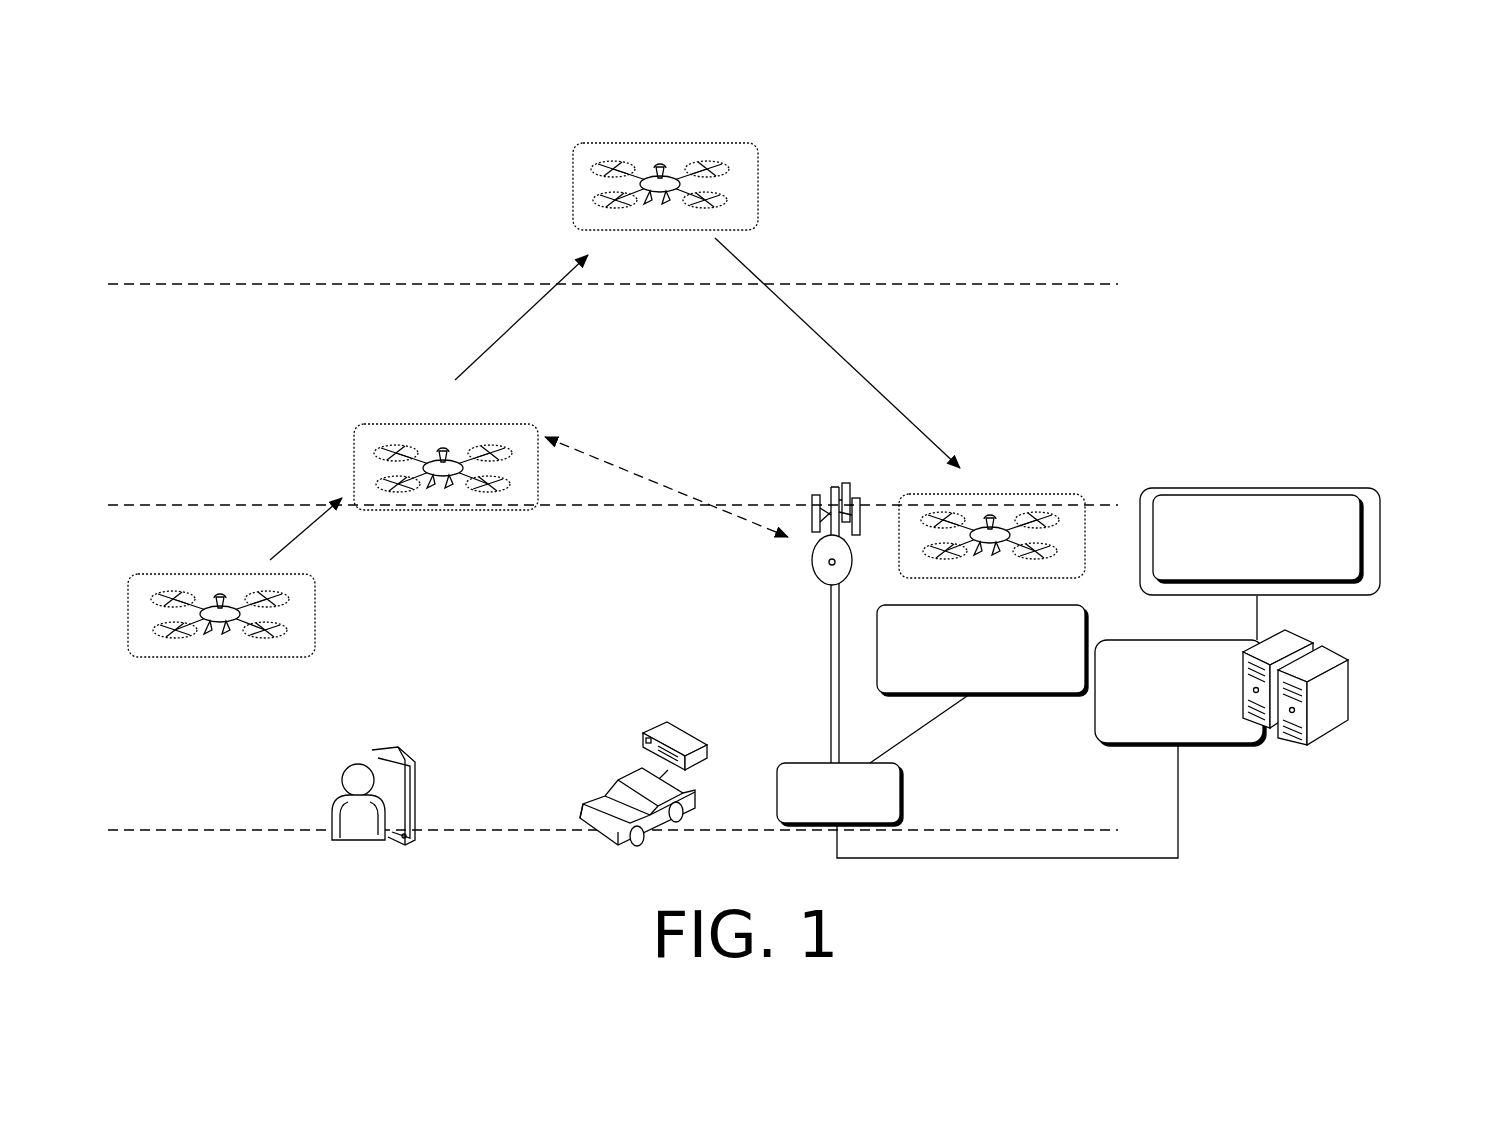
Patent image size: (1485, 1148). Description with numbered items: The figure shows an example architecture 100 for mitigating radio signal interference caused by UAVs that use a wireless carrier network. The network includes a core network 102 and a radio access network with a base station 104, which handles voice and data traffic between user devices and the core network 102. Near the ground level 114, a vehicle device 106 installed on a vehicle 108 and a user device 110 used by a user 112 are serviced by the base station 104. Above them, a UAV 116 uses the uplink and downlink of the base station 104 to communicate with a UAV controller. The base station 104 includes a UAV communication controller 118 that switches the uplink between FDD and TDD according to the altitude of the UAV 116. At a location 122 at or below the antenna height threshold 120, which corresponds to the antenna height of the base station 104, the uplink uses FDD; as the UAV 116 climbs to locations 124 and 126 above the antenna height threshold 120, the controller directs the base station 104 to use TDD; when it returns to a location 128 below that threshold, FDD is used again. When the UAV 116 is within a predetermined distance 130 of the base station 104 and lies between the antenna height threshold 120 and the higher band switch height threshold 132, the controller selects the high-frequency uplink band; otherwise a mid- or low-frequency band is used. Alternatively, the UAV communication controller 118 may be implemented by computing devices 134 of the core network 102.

The architecture 100 is at (182, 90).
The core network 102 is at (1180, 693).
The base station 104 is at (903, 768).
The vehicle device 106 is at (707, 740).
The vehicle 108 is at (632, 768).
The user device 110 is at (392, 760).
The user 112 is at (338, 800).
The ground level 114 is at (114, 833).
The UAV 116 is at (617, 402).
The UAV communication controller 118 is at (1128, 592).
The antenna height threshold 120 is at (111, 503).
The location 122 is at (313, 574).
The location 124 is at (534, 424).
The location 126 is at (755, 144).
The location 128 is at (1066, 494).
The predetermined distance 130 is at (670, 488).
The band switch height threshold 132 is at (126, 285).
The computing devices 134 is at (1295, 632).